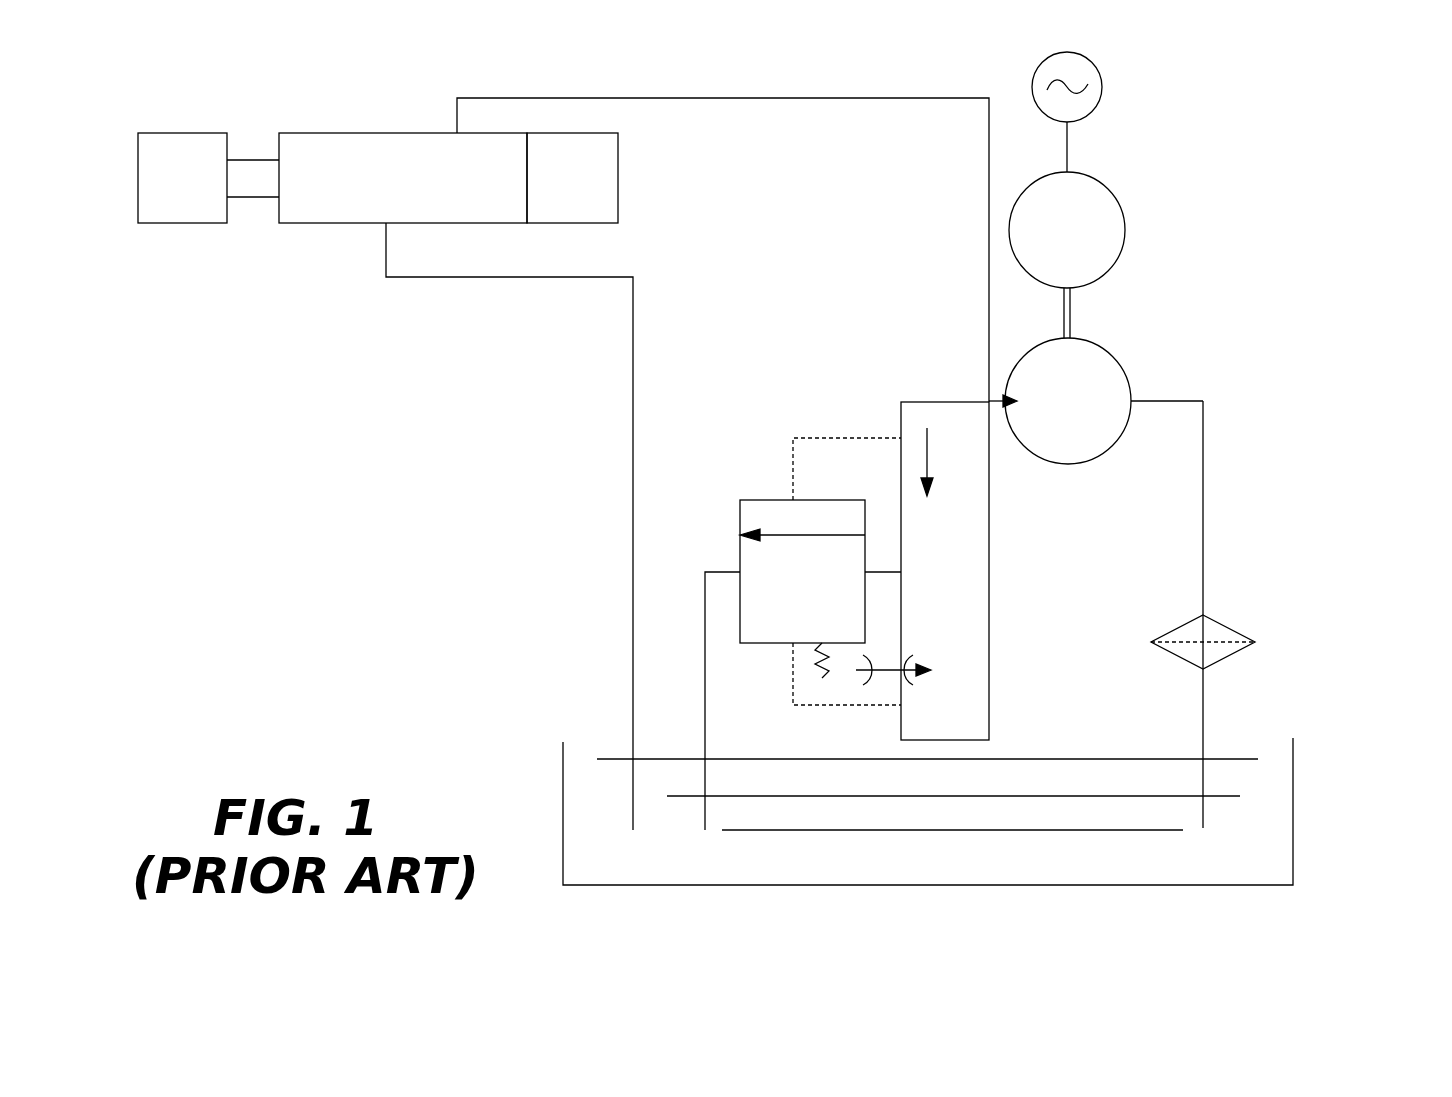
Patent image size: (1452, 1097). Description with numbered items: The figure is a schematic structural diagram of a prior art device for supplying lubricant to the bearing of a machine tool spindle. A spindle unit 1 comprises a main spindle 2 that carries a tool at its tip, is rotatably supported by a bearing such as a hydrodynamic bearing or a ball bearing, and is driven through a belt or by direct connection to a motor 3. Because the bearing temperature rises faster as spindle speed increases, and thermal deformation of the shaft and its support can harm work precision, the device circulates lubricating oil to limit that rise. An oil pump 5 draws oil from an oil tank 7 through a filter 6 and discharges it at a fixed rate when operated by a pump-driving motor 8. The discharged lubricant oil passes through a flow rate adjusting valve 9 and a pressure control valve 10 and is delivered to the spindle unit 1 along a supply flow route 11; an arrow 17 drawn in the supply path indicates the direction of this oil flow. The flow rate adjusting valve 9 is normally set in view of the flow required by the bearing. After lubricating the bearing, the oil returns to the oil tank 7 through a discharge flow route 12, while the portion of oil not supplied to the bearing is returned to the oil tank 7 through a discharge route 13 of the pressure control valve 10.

The spindle unit 1 is at (310, 133).
The main spindle 2 is at (250, 185).
The motor 3 is at (575, 133).
The oil pump 5 is at (1122, 370).
The filter 6 is at (1225, 626).
The oil tank 7 is at (1283, 804).
The pump-driving motor 8 is at (1120, 208).
The flow rate adjusting valve 9 is at (882, 675).
The pressure control valve 10 is at (757, 500).
The supply flow route 11 is at (989, 695).
The discharge flow route 12 is at (567, 277).
The discharge route 13 is at (705, 590).
The oil flow arrow 17 is at (930, 465).